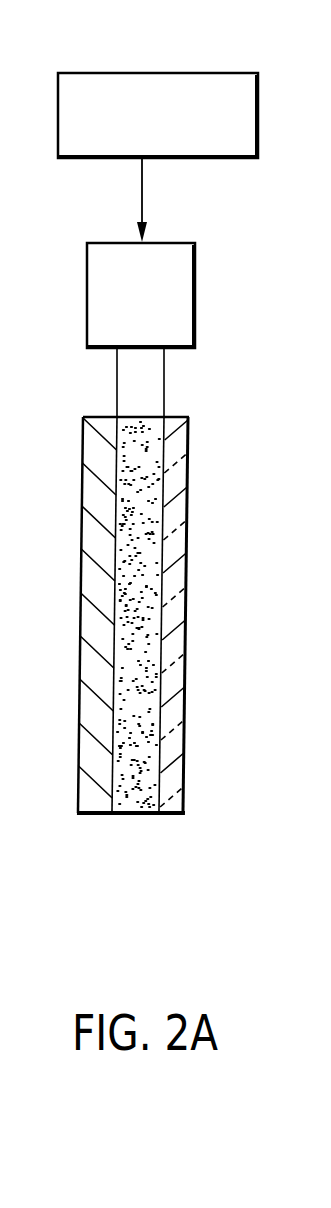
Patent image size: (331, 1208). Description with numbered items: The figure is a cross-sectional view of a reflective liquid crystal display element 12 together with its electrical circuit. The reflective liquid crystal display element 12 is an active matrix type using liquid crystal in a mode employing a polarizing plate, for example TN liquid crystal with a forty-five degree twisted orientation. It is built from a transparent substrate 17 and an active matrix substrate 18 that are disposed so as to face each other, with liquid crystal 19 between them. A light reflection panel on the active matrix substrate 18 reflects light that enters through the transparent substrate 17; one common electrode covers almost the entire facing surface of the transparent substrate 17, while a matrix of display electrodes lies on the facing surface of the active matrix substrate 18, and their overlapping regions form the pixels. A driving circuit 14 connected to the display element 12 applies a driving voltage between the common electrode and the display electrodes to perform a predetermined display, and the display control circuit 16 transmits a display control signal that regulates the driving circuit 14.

The display control circuit 16 is at (258, 100).
The driving circuit 14 is at (88, 257).
The reflective liquid crystal display element 12 is at (129, 646).
The active matrix substrate 18 is at (88, 808).
The liquid crystal 19 is at (133, 807).
The transparent substrate 17 is at (192, 648).